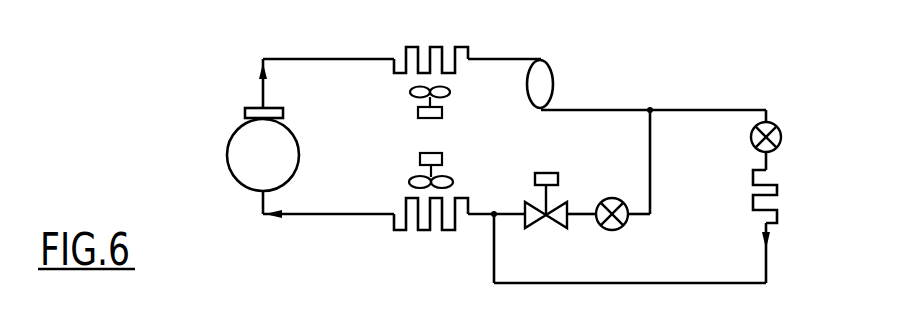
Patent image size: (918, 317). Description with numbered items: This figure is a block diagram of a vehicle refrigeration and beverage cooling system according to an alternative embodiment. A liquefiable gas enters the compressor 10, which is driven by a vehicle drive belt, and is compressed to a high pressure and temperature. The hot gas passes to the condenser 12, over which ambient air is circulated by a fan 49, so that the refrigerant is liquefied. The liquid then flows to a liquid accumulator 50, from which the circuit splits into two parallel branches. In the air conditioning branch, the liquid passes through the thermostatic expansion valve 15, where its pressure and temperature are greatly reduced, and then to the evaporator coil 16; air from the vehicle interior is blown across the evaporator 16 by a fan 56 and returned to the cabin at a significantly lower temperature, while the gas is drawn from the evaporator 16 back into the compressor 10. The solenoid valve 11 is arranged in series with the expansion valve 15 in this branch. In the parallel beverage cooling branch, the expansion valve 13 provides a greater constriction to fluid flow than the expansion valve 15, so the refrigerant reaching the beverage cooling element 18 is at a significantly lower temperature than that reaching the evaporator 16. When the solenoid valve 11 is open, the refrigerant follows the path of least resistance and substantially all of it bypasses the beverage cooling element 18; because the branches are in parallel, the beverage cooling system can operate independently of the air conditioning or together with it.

The compressor 10 is at (228, 160).
The condenser 12 is at (440, 47).
The fan 49 is at (442, 113).
The liquid accumulator 50 is at (556, 78).
The expansion valve 13 is at (782, 138).
The beverage cooling element 18 is at (777, 190).
The solenoid valve 11 is at (549, 212).
The thermostatic expansion valve 15 is at (618, 229).
The evaporator coil 16 is at (413, 230).
The fan 56 is at (442, 160).